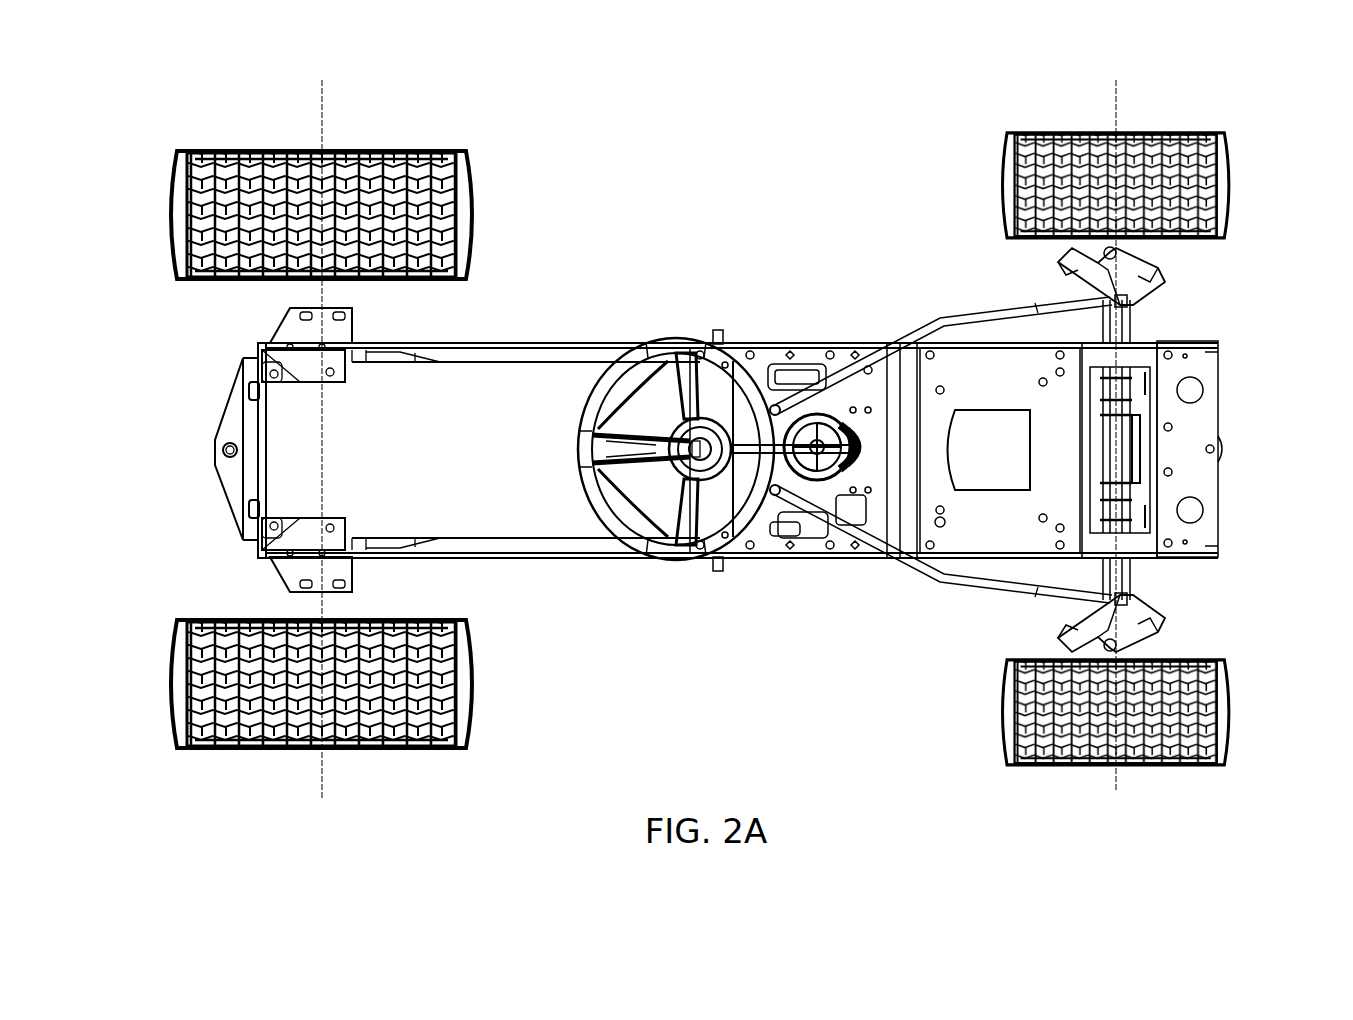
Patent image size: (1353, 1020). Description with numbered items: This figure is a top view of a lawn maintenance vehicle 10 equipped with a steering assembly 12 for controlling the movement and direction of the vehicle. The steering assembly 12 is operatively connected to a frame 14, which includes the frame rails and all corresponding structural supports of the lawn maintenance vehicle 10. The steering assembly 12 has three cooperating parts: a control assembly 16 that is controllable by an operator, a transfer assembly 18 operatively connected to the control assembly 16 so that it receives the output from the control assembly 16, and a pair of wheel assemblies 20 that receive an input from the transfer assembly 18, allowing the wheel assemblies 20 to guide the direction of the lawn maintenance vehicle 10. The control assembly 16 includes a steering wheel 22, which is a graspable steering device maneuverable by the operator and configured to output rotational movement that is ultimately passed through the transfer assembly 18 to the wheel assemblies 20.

The lawn maintenance vehicle 10 is at (816, 168).
The steering assembly 12 is at (697, 572).
The frame 14 is at (750, 352).
The control assembly 16 is at (737, 522).
The transfer assembly 18 is at (858, 398).
The wheel assemblies 20 is at (1206, 280).
The steering wheel 22 is at (636, 352).